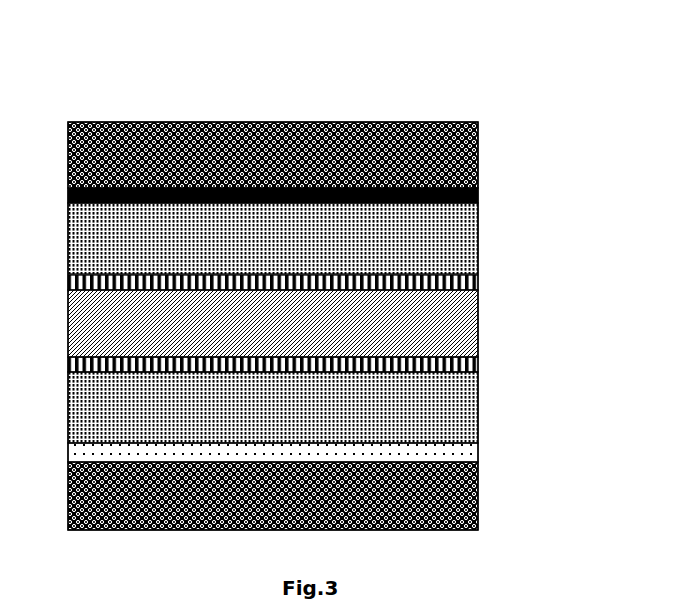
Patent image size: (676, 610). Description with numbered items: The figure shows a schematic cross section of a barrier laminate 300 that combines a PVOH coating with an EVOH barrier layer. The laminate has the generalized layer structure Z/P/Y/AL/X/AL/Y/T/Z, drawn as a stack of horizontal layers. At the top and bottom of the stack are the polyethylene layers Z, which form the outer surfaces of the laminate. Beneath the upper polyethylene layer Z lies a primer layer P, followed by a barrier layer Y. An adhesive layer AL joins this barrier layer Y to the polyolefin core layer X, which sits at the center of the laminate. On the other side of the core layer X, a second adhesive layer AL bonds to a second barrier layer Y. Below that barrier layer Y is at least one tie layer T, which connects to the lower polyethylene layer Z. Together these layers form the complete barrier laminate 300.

The barrier laminate 300 is at (313, 65).
The polyethylene layer Z is at (480, 147).
The primer layer P is at (480, 190).
The barrier layer Y is at (480, 234).
The adhesive layer AL is at (480, 278).
The polyolefin core layer X is at (480, 322).
The tie layer T is at (480, 453).